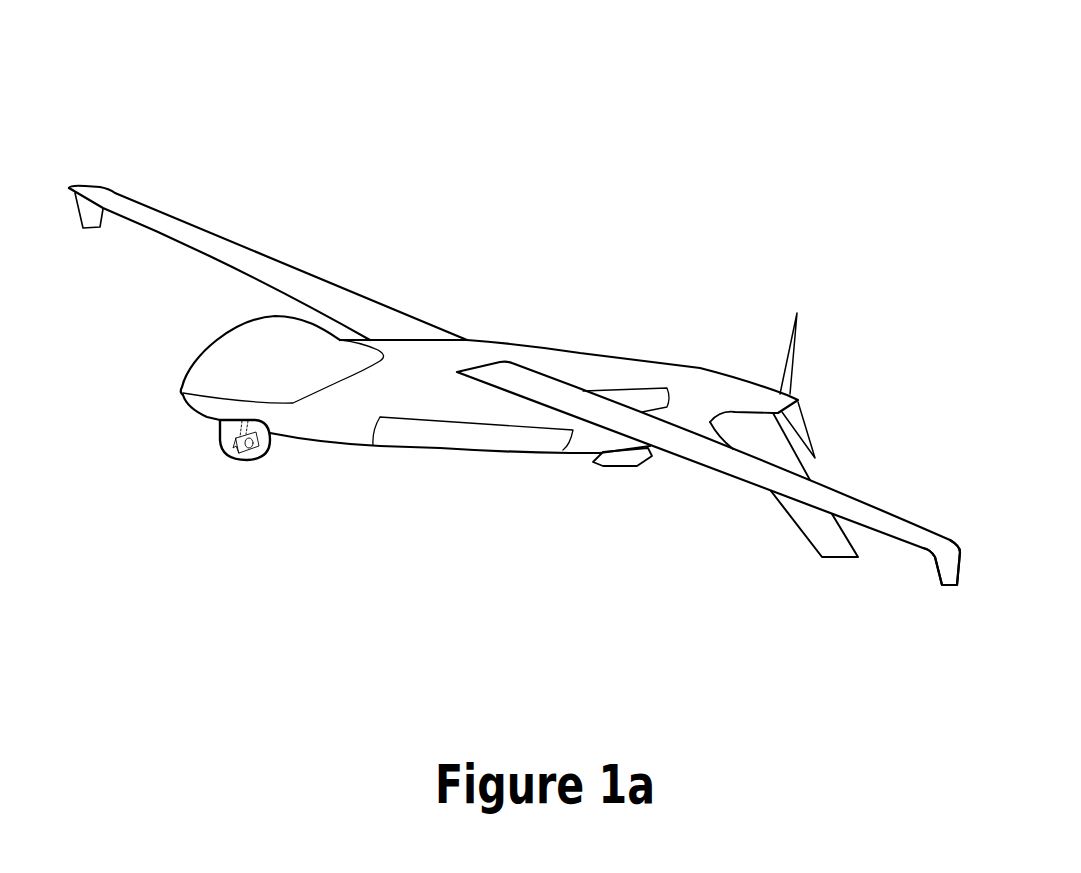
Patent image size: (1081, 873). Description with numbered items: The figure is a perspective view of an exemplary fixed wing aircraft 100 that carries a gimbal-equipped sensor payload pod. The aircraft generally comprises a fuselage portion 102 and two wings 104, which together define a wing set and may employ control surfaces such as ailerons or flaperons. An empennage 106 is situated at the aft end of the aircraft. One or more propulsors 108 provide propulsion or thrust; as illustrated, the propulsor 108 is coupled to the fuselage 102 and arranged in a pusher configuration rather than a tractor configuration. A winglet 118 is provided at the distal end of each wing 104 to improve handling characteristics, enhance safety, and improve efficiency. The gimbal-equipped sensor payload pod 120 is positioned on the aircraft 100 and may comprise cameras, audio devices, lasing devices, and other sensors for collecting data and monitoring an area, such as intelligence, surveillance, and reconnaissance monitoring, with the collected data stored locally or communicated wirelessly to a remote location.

The fixed wing aircraft 100 is at (571, 321).
The fuselage portion 102 is at (596, 352).
The wings 104 is at (201, 226).
The empennage 106 is at (837, 562).
The propulsor 108 is at (796, 315).
The winglet 118 is at (955, 565).
The gimbal-equipped sensor payload pod 120 is at (267, 460).